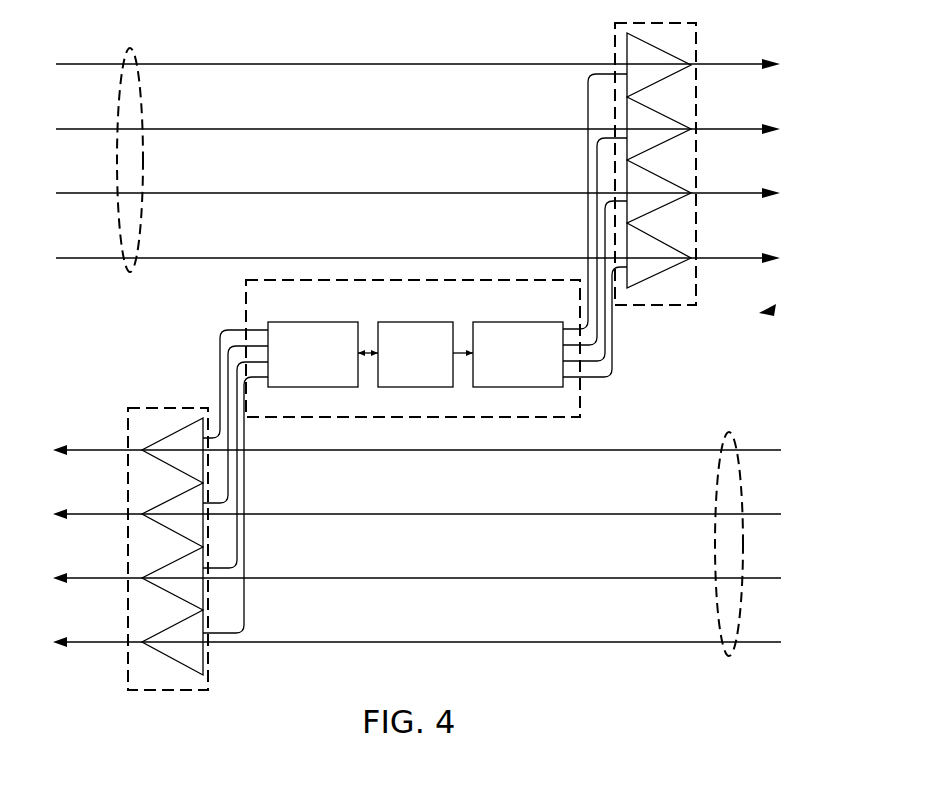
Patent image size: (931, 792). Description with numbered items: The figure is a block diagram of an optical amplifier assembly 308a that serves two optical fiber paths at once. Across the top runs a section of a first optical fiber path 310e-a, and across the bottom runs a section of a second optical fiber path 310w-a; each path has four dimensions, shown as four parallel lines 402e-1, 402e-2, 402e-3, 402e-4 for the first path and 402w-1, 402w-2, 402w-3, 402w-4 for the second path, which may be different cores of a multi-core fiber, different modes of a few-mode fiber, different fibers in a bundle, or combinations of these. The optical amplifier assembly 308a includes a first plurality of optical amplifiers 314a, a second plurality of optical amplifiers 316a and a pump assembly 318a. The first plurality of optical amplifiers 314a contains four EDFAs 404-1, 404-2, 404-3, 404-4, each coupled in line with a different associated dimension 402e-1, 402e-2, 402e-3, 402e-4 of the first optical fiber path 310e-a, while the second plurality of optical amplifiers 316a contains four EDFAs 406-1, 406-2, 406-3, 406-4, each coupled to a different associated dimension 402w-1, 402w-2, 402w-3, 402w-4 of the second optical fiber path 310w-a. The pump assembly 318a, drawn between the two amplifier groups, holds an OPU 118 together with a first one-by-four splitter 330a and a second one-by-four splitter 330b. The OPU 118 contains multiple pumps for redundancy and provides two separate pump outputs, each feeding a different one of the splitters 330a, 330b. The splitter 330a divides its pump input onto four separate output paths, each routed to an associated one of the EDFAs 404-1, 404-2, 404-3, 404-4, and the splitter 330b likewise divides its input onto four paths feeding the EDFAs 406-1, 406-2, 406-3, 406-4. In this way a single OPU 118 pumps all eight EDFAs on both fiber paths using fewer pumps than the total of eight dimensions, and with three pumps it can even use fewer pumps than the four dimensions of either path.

The first optical fiber path 310e-a is at (130, 50).
The dimension of first optical fiber path 402e-1 is at (287, 64).
The dimension of first optical fiber path 402e-2 is at (290, 129).
The dimension of first optical fiber path 402e-3 is at (290, 193).
The dimension of first optical fiber path 402e-4 is at (290, 258).
The pump assembly 318a is at (244, 302).
The second 1×4 splitter 330b is at (294, 386).
The OPU 118 is at (401, 373).
The first 1×4 splitter 330a is at (499, 386).
The first plurality of optical amplifiers 314a is at (615, 42).
The EDFA 404-1 is at (674, 54).
The EDFA 404-2 is at (674, 119).
The EDFA 404-3 is at (674, 183).
The EDFA 404-4 is at (674, 248).
The optical amplifier assembly 308a is at (770, 311).
The dimension of second optical fiber path 402w-1 is at (591, 450).
The dimension of second optical fiber path 402w-2 is at (591, 514).
The dimension of second optical fiber path 402w-3 is at (591, 578).
The dimension of second optical fiber path 402w-4 is at (591, 642).
The second optical fiber path 310w-a is at (727, 657).
The second plurality of optical amplifiers 316a is at (151, 690).
The EDFA 406-1 is at (156, 443).
The EDFA 406-2 is at (156, 507).
The EDFA 406-3 is at (156, 571).
The EDFA 406-4 is at (156, 636).